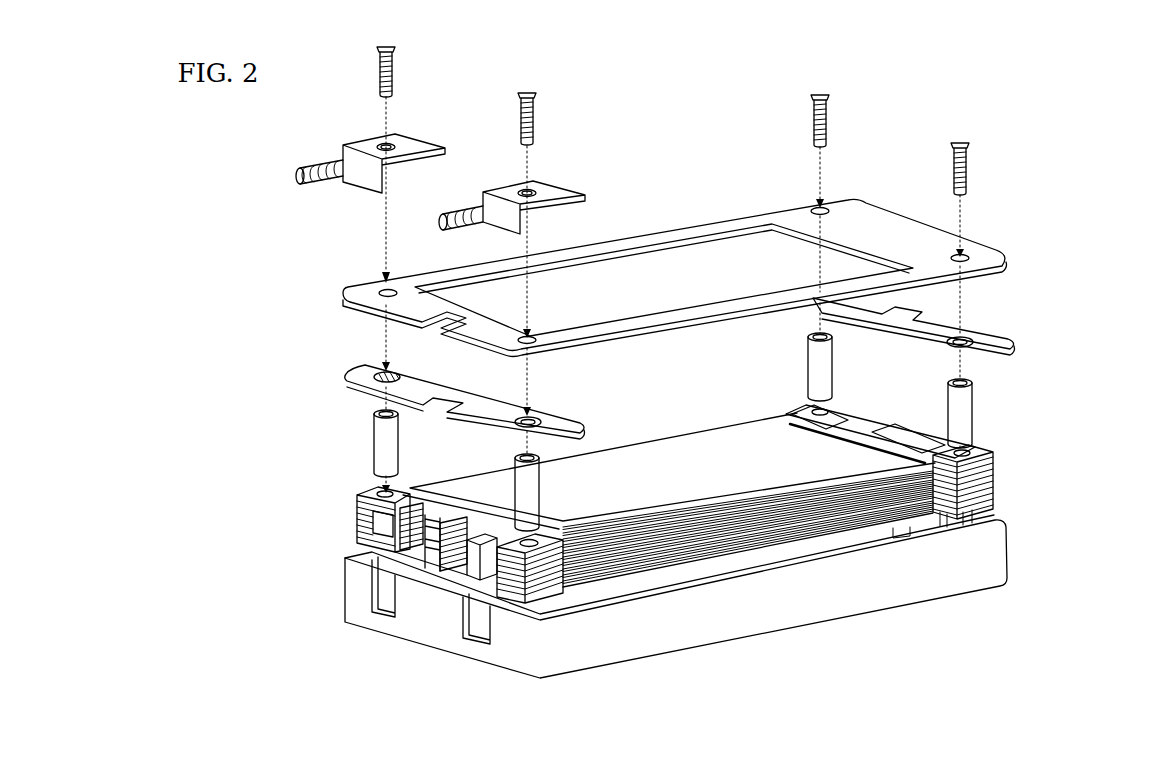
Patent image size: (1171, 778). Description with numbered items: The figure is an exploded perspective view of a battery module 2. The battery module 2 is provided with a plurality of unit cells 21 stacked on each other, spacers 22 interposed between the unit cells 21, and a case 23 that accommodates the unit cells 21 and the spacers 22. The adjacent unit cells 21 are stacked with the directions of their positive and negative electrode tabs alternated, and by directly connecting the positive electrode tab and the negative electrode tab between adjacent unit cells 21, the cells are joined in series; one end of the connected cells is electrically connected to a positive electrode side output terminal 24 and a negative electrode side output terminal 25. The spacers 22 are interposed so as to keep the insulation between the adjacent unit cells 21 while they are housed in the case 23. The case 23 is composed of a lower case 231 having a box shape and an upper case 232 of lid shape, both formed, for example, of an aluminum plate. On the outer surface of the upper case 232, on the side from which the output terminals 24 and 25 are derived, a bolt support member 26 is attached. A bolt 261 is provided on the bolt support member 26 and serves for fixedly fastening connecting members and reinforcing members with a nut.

The battery module 2 is at (1026, 116).
The unit cell 21 is at (752, 528).
The spacer 22 is at (548, 567).
The case 23 is at (1128, 368).
The lower case 231 is at (997, 563).
The upper case 232 is at (1013, 242).
The positive electrode side output terminal 24 is at (355, 517).
The negative electrode side output terminal 25 is at (462, 570).
The bolt support member 26 is at (423, 137).
The bolt 261 is at (335, 182).